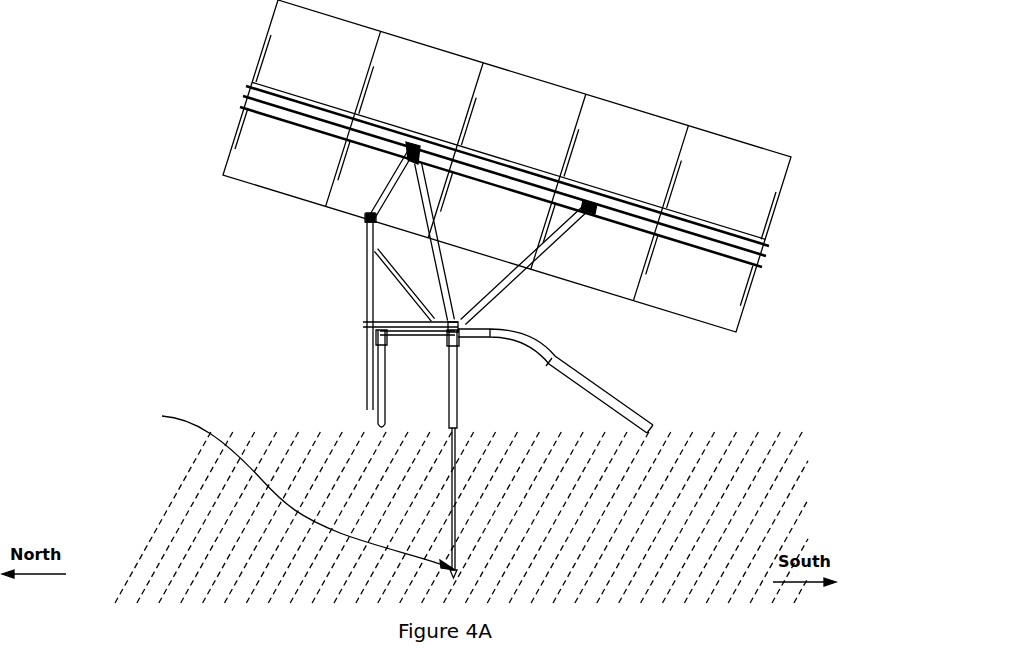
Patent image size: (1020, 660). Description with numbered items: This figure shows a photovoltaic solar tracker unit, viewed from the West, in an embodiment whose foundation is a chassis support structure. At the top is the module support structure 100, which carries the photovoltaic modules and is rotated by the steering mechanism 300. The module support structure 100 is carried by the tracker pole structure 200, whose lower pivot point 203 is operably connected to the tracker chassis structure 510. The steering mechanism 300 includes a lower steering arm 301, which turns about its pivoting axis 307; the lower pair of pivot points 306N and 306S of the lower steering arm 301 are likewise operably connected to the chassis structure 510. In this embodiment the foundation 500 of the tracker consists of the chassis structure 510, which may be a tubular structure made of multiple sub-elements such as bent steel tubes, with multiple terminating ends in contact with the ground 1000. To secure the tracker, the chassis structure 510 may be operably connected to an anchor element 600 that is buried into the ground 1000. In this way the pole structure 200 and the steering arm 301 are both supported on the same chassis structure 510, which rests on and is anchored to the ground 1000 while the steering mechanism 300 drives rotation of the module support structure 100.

The module support structure 100 is at (66, 10).
The tracker pole structure 200 is at (847, 168).
The steering mechanism 300 is at (66, 173).
The lower steering arm 301 is at (366, 262).
The pivoting axis 307 is at (362, 325).
The lower pivot point of the lower steering arm (north) 306N is at (368, 332).
The lower pivot point of the lower steering arm (south) 306S is at (447, 343).
The lower pivot point of the tracker pole structure 203 is at (460, 340).
The foundation 500 is at (847, 338).
The chassis structure 510 is at (613, 398).
The anchor element 600 is at (288, 483).
The ground 1000 is at (847, 438).